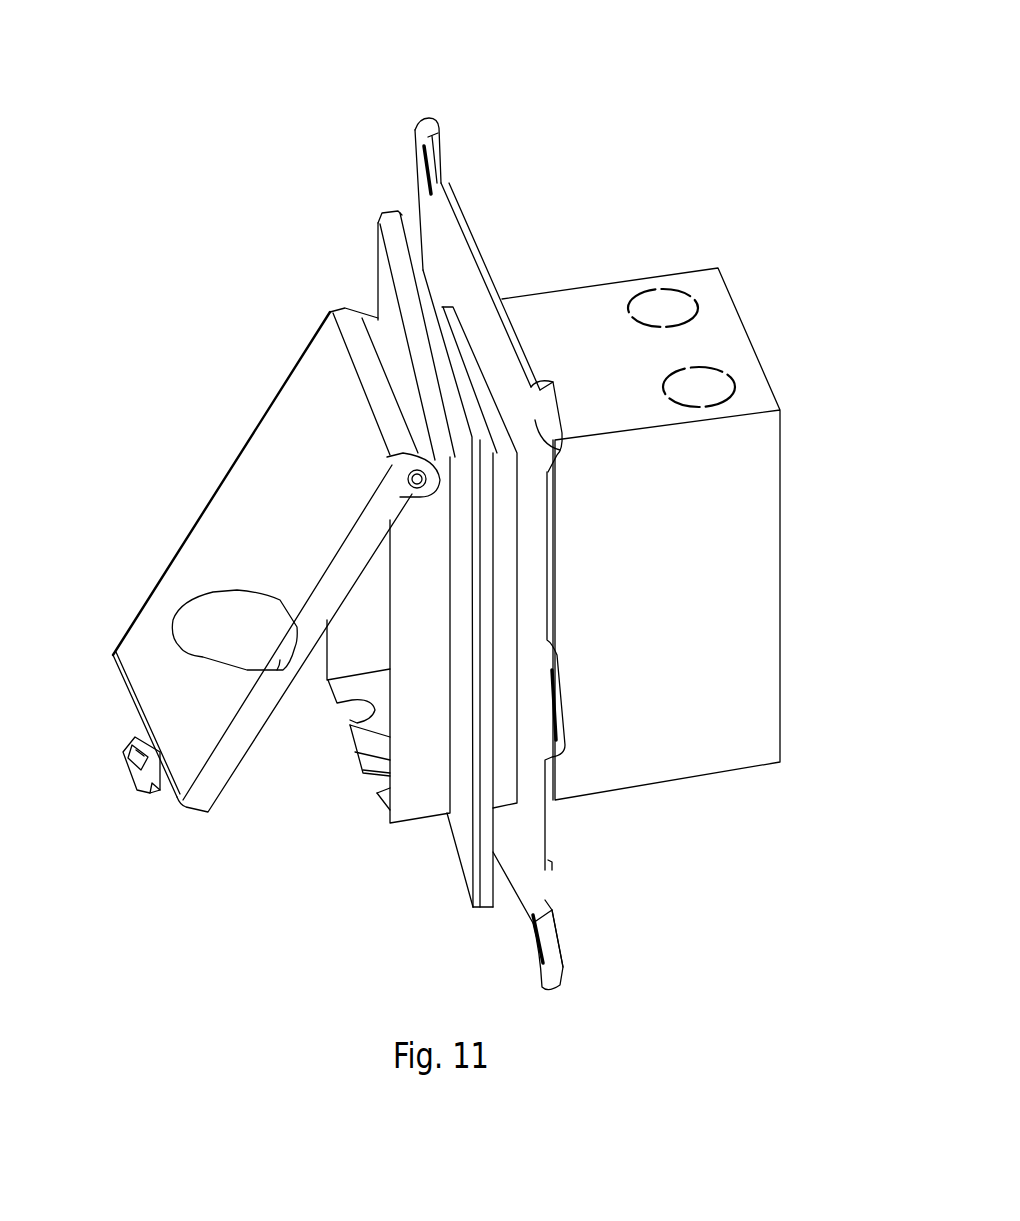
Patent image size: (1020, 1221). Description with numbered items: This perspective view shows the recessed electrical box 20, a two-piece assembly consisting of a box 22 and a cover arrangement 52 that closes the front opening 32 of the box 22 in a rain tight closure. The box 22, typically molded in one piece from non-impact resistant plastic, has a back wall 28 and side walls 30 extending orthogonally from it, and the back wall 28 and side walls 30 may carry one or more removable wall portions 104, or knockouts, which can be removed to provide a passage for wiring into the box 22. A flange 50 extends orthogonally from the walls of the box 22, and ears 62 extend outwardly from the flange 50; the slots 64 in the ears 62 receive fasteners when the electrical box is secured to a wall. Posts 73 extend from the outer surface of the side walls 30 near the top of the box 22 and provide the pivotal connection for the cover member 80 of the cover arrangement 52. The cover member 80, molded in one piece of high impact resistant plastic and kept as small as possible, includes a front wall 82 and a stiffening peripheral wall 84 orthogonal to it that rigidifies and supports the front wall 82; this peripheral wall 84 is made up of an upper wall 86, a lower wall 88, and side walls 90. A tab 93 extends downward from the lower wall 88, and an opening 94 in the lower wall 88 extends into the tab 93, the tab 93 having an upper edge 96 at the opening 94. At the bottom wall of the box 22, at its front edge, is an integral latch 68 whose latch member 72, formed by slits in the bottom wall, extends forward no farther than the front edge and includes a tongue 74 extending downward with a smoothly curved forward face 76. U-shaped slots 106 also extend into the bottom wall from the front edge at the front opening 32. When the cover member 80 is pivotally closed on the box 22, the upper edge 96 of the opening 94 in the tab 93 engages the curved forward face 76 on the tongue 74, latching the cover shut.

The recessed electrical box 20 is at (228, 205).
The box 22 is at (700, 494).
The back wall 28 is at (795, 503).
The side walls 30 is at (660, 566).
The front opening 32 is at (235, 598).
The flange 50 is at (526, 509).
The cover arrangement 52 is at (205, 460).
The ears 62 is at (433, 122).
The slots 64 is at (548, 432).
The integral latch 68 is at (350, 797).
The latch member 72 is at (372, 745).
The posts 73 is at (418, 490).
The tongue 74 is at (372, 767).
The forward face 76 is at (372, 790).
The cover member 80 is at (280, 520).
The front wall 82 is at (200, 563).
The stiffening peripheral wall 84 is at (242, 688).
The upper wall 86 is at (355, 559).
The lower wall 88 is at (176, 808).
The side walls 90 is at (290, 648).
The tab 93 is at (95, 739).
The opening 94 is at (140, 750).
The upper edge 96 is at (165, 782).
The removable wall portions 104 is at (681, 348).
The U-shaped slots 106 is at (368, 706).